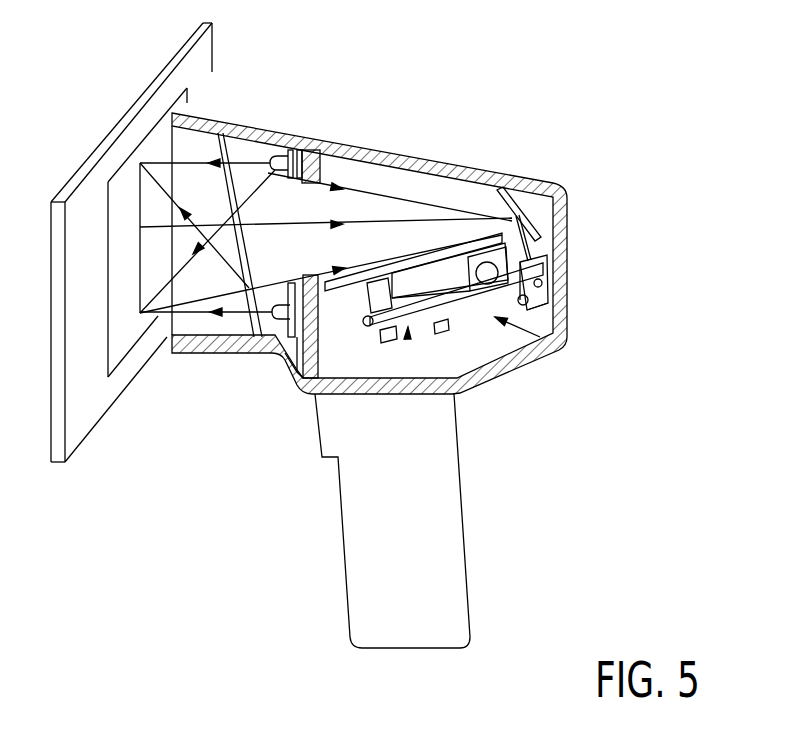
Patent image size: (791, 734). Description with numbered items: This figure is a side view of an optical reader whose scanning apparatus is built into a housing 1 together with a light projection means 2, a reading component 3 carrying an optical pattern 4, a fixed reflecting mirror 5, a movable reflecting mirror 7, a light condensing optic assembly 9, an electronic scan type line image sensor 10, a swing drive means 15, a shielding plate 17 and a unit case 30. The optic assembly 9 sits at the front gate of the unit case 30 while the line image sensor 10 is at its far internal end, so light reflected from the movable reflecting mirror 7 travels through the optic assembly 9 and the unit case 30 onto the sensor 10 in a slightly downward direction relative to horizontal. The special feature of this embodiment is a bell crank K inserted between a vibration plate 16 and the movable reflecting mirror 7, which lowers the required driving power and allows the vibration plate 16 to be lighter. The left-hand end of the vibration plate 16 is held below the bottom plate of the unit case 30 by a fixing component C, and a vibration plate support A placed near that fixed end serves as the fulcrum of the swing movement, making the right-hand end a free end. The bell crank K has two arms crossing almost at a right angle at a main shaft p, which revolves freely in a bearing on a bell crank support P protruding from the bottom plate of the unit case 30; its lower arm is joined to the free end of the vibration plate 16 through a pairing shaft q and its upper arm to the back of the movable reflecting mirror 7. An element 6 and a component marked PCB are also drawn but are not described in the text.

The housing 1 is at (350, 147).
The light projection means 2 is at (280, 156).
The reading component 3 is at (137, 97).
The optical pattern 4 is at (122, 360).
The fixed reflecting mirror 5 is at (527, 200).
The direction of insertion 6 is at (540, 337).
The movable reflecting mirror 7 is at (545, 270).
The light condensing optic assembly 9 is at (476, 262).
The electronic scan type line image sensor 10 is at (380, 268).
The swing drive means 15 is at (413, 337).
The vibration plate 16 is at (510, 310).
The shielding plate 17 is at (303, 390).
The unit case 30 is at (405, 340).
The vibration plate support A is at (468, 313).
The fixing component C is at (343, 287).
The printed circuit board PCB is at (322, 295).
The main shaft p is at (545, 280).
The bell crank support P is at (548, 288).
The bell crank K is at (552, 301).
The pairing shaft q is at (550, 300).